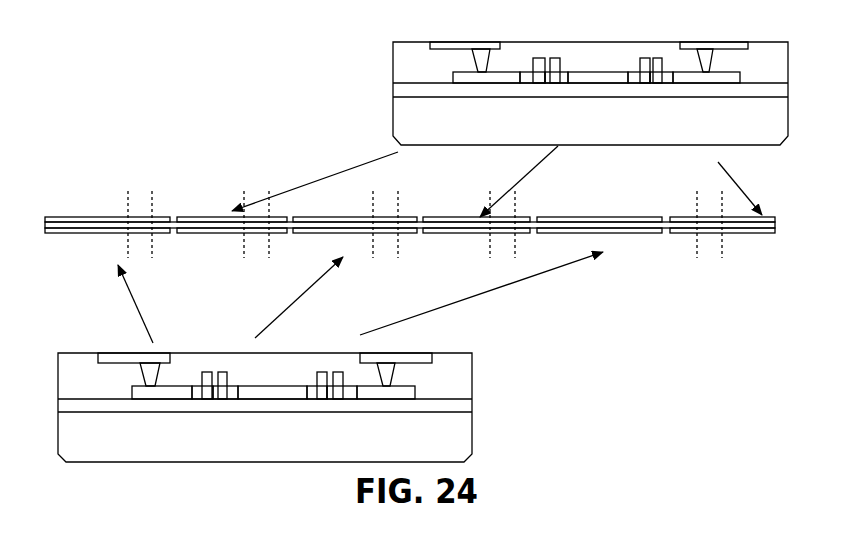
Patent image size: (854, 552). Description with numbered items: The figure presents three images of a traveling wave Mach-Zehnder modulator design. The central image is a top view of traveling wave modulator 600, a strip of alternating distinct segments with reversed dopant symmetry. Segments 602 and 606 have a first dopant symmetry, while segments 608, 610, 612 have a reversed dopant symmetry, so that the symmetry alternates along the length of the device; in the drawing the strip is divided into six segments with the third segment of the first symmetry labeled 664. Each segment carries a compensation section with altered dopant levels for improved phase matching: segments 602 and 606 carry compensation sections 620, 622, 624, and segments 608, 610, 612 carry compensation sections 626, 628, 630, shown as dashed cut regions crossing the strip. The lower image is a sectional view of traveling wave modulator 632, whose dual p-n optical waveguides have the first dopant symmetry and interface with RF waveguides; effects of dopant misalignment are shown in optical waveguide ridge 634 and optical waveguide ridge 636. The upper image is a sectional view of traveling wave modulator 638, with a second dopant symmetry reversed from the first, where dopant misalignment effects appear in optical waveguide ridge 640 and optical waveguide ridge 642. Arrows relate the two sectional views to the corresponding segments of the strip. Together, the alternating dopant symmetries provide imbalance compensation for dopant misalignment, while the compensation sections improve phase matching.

The traveling wave modulator 600 is at (351, 201).
The segment 602 is at (91, 217).
The segment 606 is at (607, 234).
The segment 608 is at (230, 234).
The segment 610 is at (468, 217).
The segment 612 is at (712, 217).
The compensation section 620 is at (138, 217).
The compensation section 622 is at (258, 234).
The compensation section 624 is at (388, 234).
The compensation section 626 is at (503, 234).
The compensation section 628 is at (573, 217).
The compensation section 630 is at (740, 234).
The traveling wave modulator 632 is at (289, 389).
The optical waveguide ridge 634 is at (215, 364).
The optical waveguide ridge 636 is at (330, 366).
The traveling wave modulator 638 is at (569, 75).
The optical waveguide ridge 640 is at (548, 50).
The optical waveguide ridge 642 is at (653, 50).
The third strip segment 664 is at (330, 234).